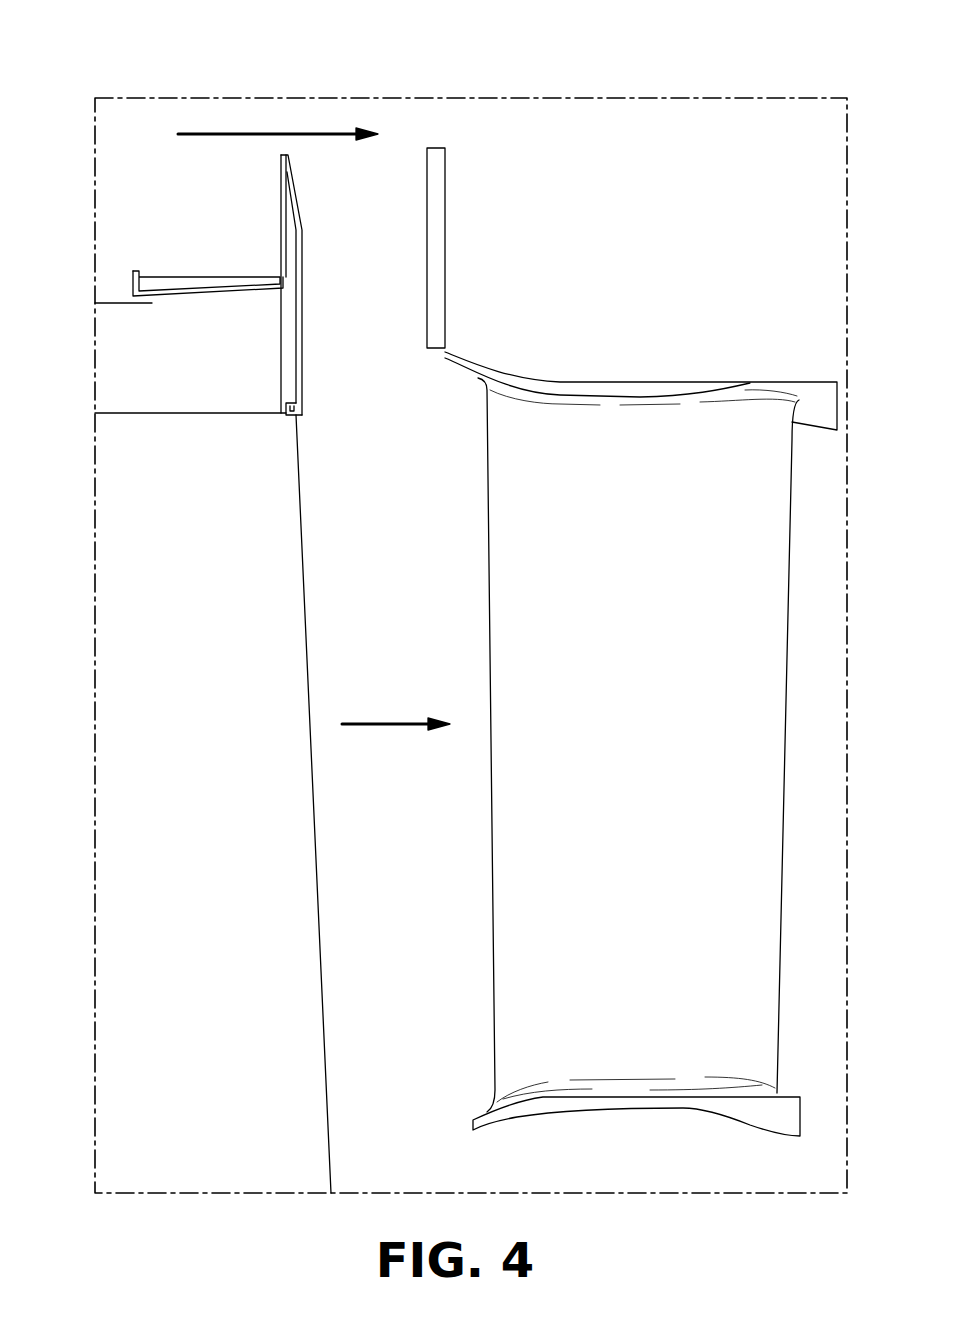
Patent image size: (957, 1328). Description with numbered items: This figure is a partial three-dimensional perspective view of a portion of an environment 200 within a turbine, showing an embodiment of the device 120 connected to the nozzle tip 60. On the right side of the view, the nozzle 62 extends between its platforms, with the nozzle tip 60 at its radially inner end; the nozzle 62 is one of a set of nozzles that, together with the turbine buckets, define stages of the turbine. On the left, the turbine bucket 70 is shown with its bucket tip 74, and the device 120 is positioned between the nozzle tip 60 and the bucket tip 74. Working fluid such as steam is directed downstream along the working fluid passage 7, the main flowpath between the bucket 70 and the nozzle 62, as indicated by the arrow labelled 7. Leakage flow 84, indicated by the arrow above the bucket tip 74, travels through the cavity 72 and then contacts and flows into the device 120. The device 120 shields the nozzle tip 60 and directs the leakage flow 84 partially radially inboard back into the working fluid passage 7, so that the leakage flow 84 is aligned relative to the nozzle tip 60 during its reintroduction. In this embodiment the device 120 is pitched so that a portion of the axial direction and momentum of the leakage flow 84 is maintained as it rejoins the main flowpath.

The environment 200 is at (132, 90).
The leakage flow 84 is at (278, 120).
The cavity 72 is at (166, 218).
The bucket tip 74 is at (200, 394).
The turbine bucket 70 is at (177, 841).
The device 120 is at (427, 191).
The nozzle tip 60 is at (614, 300).
The nozzle 62 is at (602, 803).
The working fluid passage 7 is at (396, 740).